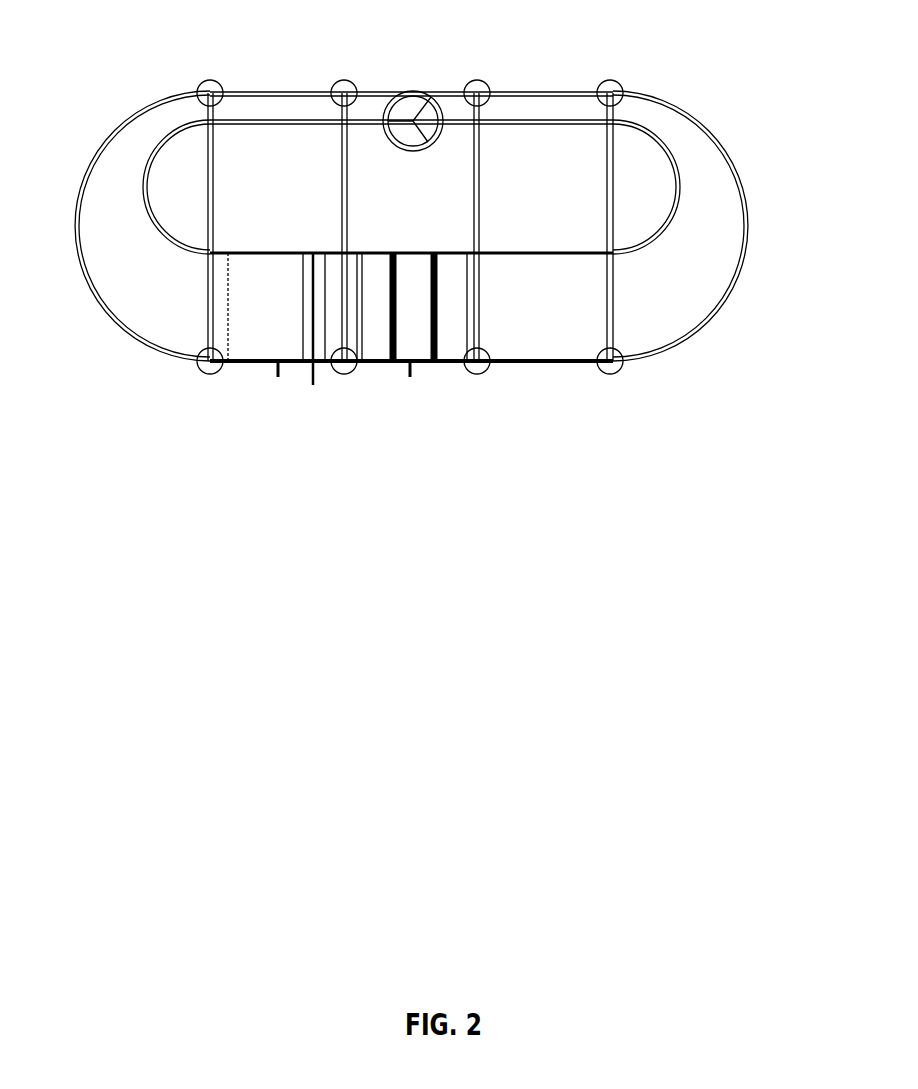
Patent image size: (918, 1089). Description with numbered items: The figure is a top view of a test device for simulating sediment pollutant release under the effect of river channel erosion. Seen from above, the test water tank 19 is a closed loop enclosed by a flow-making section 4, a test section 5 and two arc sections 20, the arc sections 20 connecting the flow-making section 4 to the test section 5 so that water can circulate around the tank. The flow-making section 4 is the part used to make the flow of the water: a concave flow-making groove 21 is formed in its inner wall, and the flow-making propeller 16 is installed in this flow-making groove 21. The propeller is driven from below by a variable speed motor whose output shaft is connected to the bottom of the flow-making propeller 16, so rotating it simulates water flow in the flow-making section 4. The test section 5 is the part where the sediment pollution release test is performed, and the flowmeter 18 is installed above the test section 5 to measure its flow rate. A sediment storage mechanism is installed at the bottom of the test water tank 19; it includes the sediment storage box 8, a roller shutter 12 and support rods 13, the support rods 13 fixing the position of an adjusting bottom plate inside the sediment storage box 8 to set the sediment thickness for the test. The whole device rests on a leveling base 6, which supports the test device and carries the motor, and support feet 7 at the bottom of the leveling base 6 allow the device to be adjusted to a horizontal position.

The flow-making section 4 is at (288, 108).
The test section 5 is at (568, 340).
The leveling base 6 is at (483, 187).
The support feet 7 is at (342, 90).
The sediment storage box 8 is at (412, 342).
The roller shutter 12 is at (313, 385).
The support rods 13 is at (392, 250).
The flow-making propeller 16 is at (430, 95).
The flowmeter 18 is at (220, 307).
The test water tank 19 is at (735, 167).
The arc sections 20 is at (120, 238).
The flow-making groove 21 is at (445, 120).